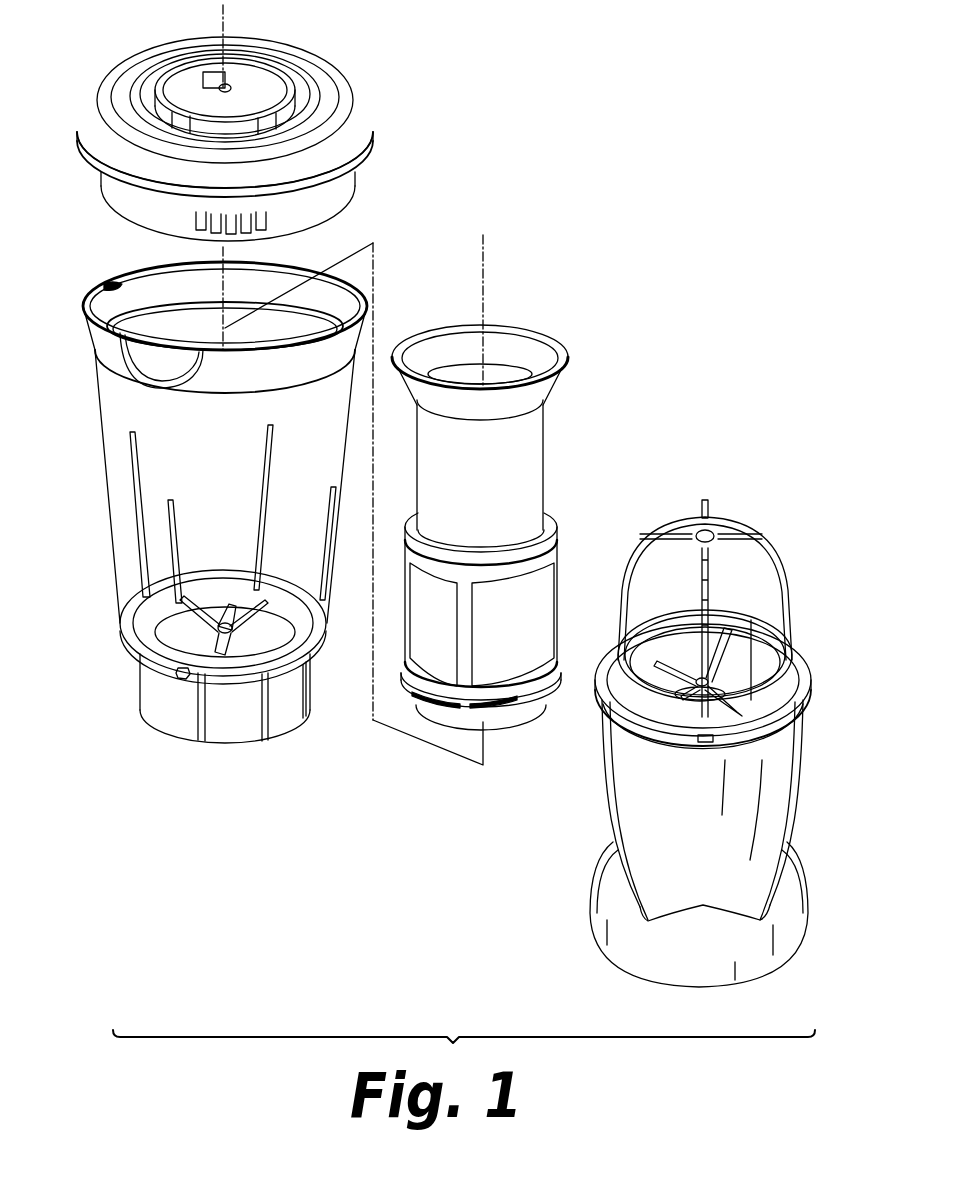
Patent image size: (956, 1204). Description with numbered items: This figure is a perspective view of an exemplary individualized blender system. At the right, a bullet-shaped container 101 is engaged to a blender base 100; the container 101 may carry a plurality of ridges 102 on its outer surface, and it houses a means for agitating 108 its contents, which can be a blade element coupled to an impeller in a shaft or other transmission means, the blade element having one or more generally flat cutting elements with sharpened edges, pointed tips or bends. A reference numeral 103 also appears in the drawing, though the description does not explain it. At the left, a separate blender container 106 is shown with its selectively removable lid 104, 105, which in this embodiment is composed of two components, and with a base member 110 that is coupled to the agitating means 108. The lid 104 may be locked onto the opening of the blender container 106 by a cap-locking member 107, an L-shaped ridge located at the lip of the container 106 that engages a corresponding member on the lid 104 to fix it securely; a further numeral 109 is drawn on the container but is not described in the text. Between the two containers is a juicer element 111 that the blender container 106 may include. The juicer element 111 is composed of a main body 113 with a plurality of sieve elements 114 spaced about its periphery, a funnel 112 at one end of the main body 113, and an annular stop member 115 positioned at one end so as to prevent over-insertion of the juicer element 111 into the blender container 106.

The blender base 100 is at (777, 772).
The container 101 is at (757, 595).
The ridges 102 is at (640, 537).
The blade assembly of base 103 is at (723, 658).
The lid 104 is at (125, 72).
The lid 105 is at (265, 95).
The blender container 106 is at (138, 462).
The cap-locking member 107 is at (112, 283).
The means for agitating 108 is at (200, 615).
The fastener 109 is at (180, 676).
The base member 110 is at (182, 718).
The juicer element 111 is at (468, 312).
The funnel 112 is at (524, 355).
The main body 113 is at (527, 438).
The sieve elements 114 is at (416, 598).
The annular stop member 115 is at (422, 698).